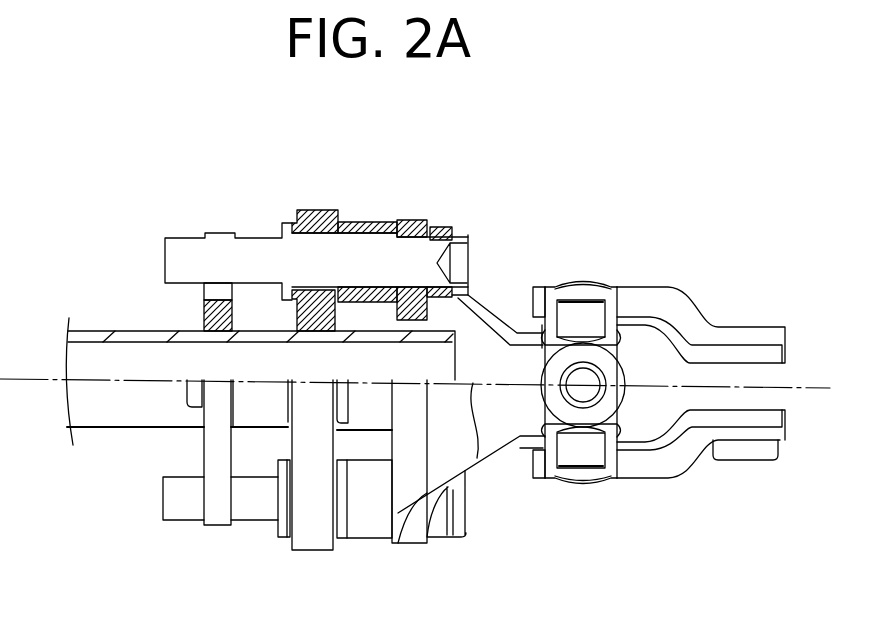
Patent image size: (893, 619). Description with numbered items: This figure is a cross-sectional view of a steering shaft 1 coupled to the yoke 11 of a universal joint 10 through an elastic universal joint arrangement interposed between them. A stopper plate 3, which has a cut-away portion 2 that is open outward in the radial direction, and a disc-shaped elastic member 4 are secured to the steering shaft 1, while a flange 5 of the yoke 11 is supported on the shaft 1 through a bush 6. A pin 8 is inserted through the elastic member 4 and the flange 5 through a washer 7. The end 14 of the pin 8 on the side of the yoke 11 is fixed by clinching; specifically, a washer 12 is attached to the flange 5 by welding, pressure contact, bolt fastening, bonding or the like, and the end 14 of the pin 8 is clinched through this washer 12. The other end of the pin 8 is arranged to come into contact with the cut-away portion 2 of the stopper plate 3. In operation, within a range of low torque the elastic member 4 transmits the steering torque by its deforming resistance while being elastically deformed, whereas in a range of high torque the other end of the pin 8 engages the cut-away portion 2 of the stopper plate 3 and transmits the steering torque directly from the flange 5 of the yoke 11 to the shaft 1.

The steering shaft 1 is at (88, 331).
The cut-away portion 2 is at (204, 292).
The stopper plate 3 is at (204, 318).
The elastic member 4 is at (315, 210).
The flange 5 is at (412, 220).
The bush 6 is at (427, 325).
The washer 7 is at (363, 222).
The pin 8 is at (250, 238).
The universal joint 10 is at (663, 278).
The yoke 11 is at (500, 315).
The washer 12 is at (440, 227).
The end of the pin 14 is at (466, 233).